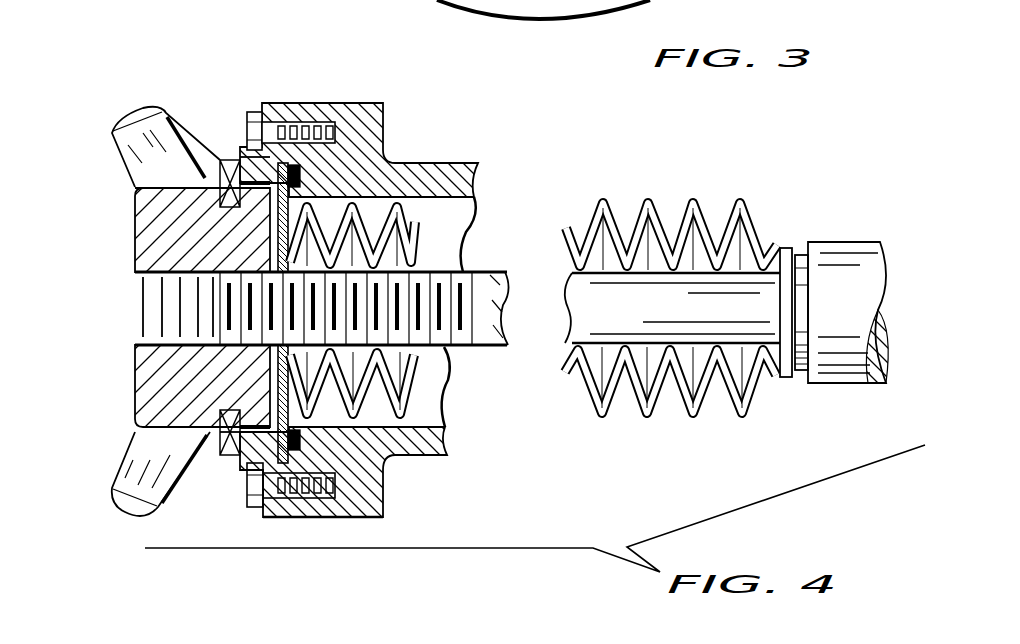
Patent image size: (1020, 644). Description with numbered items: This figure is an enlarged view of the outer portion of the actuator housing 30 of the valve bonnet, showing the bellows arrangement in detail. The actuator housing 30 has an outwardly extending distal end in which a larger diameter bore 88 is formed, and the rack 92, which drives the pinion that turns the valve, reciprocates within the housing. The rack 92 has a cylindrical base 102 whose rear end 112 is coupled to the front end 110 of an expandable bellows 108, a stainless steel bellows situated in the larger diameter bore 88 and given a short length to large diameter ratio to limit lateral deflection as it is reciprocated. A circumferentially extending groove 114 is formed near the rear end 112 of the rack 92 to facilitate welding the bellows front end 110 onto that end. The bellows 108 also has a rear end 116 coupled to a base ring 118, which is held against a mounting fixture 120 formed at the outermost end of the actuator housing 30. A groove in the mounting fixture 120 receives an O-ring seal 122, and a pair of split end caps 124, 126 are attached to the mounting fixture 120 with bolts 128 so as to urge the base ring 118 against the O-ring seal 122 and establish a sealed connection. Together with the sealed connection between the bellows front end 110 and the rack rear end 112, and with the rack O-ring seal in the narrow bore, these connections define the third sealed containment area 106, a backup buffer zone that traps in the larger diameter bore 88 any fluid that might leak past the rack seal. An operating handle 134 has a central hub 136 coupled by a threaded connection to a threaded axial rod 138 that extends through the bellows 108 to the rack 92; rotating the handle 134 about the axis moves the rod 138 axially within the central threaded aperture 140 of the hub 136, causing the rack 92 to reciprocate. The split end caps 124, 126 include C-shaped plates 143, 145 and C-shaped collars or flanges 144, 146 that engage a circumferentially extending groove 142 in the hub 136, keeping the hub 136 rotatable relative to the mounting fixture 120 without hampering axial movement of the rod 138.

The actuator housing 30 is at (410, 486).
The larger diameter bore 88 is at (443, 200).
The rack 92 is at (845, 396).
The cylindrical base 102 is at (848, 270).
The third sealed containment area 106 is at (426, 399).
The expandable bellows 108 is at (648, 203).
The front end 110 is at (768, 250).
The rear end 112 is at (783, 388).
The circumferentially extending groove 114 is at (800, 253).
The rear end 116 is at (255, 228).
The base ring 118 is at (222, 192).
The mounting fixture 120 is at (350, 115).
The O-ring seal 122 is at (302, 177).
The split end cap 124 is at (229, 142).
The split end cap 126 is at (233, 478).
The bolts 128 is at (253, 114).
The operating handle 134 is at (103, 98).
The central hub 136 is at (145, 383).
The threaded axial rod 138 is at (417, 282).
The central threaded aperture 140 is at (160, 343).
The circumferentially extending groove 142 is at (222, 188).
The C-shaped plate 143 is at (270, 107).
The C-shaped collar or flange 144 is at (225, 190).
The C-shaped plate 145 is at (360, 518).
The C-shaped collar or flange 146 is at (223, 448).